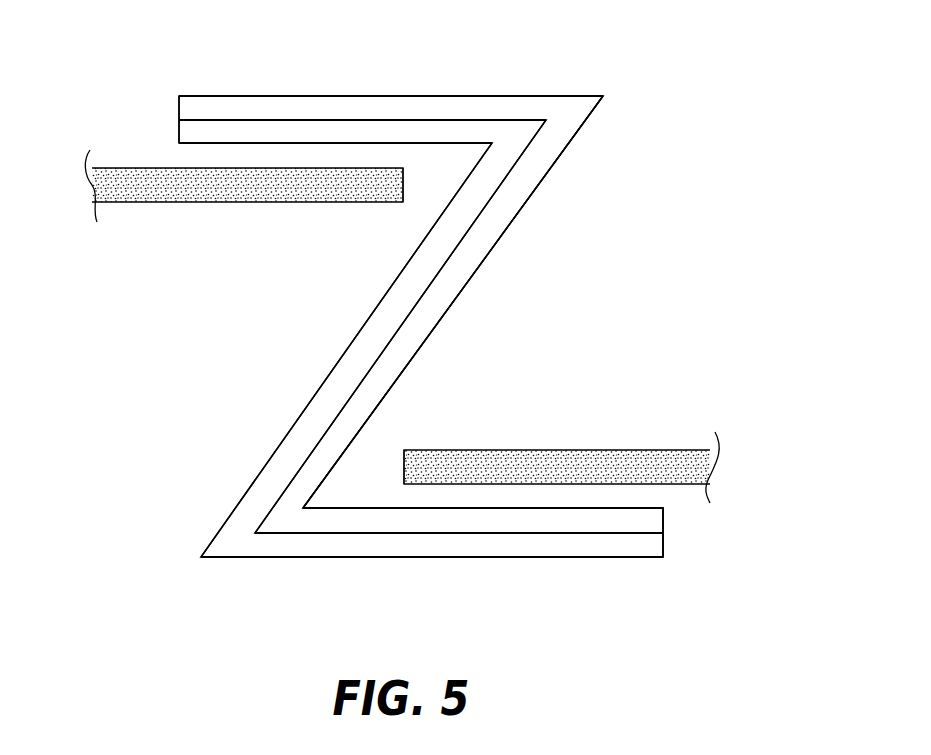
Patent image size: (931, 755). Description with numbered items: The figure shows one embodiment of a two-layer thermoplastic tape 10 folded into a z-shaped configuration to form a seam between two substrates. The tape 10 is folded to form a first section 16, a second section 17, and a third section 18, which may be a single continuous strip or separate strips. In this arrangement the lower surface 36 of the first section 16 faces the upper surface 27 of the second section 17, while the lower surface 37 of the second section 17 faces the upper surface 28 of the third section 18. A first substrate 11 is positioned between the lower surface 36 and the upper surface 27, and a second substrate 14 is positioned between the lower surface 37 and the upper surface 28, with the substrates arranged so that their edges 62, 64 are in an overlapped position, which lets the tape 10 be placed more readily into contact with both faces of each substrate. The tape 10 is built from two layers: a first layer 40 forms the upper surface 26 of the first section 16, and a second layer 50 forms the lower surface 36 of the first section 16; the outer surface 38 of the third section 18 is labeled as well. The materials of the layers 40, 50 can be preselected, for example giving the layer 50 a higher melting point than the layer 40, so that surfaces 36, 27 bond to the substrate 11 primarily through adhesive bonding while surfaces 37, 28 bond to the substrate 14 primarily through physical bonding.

The thermoplastic tape 10 is at (569, 169).
The first substrate 11 is at (217, 210).
The second substrate 14 is at (554, 441).
The first section 16 is at (339, 105).
The second section 17 is at (446, 284).
The third section 18 is at (291, 550).
The upper surface of the first section 26 is at (512, 96).
The upper surface of the second section 27 is at (386, 293).
The upper surface of the third section 28 is at (640, 509).
The lower surface of the first section 36 is at (415, 143).
The lower surface of the second section 37 is at (412, 360).
The outer surface of second arm 38 is at (213, 559).
The first layer 40 is at (232, 103).
The second layer 50 is at (187, 129).
The edge of the first substrate 62 is at (403, 181).
The edge of the second substrate 64 is at (404, 462).